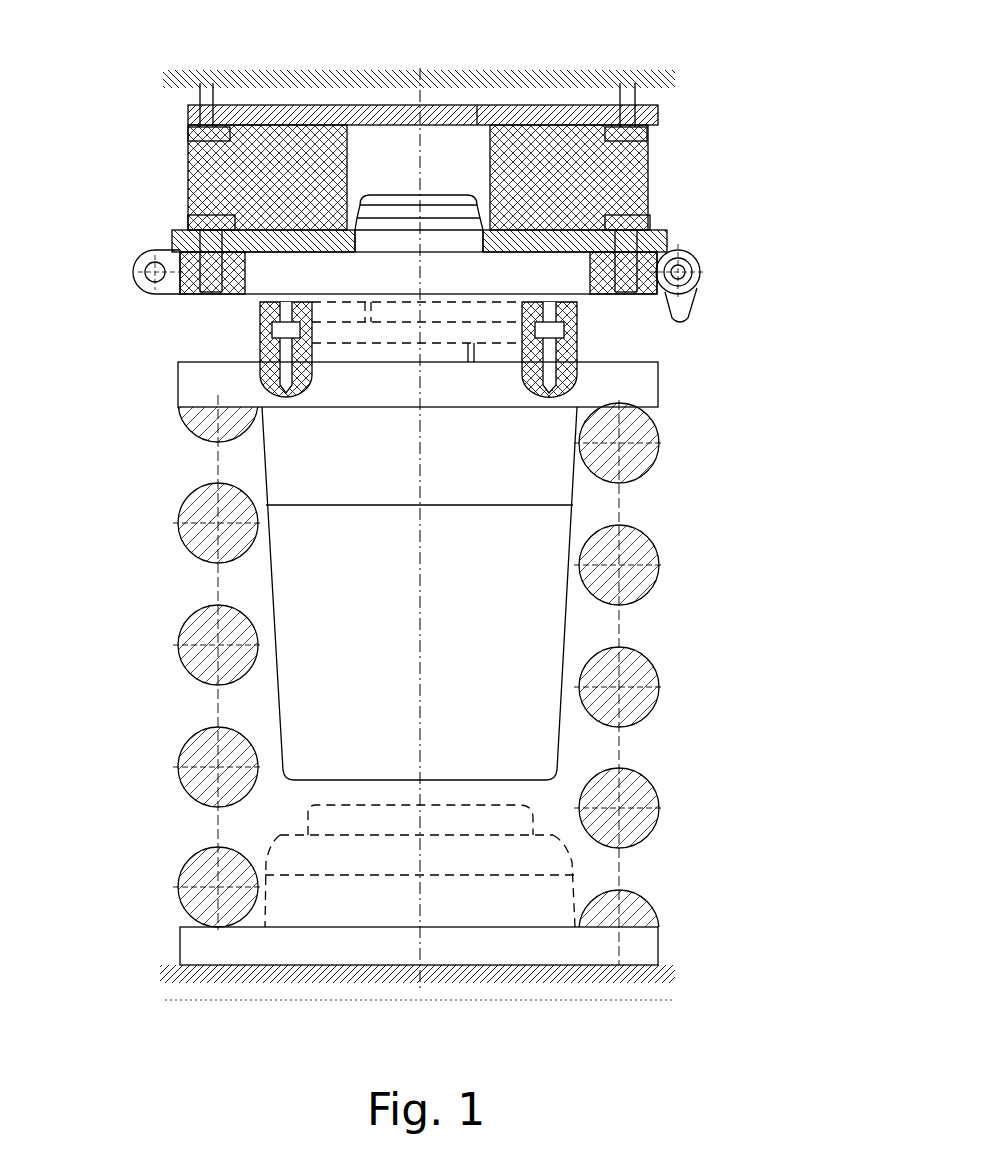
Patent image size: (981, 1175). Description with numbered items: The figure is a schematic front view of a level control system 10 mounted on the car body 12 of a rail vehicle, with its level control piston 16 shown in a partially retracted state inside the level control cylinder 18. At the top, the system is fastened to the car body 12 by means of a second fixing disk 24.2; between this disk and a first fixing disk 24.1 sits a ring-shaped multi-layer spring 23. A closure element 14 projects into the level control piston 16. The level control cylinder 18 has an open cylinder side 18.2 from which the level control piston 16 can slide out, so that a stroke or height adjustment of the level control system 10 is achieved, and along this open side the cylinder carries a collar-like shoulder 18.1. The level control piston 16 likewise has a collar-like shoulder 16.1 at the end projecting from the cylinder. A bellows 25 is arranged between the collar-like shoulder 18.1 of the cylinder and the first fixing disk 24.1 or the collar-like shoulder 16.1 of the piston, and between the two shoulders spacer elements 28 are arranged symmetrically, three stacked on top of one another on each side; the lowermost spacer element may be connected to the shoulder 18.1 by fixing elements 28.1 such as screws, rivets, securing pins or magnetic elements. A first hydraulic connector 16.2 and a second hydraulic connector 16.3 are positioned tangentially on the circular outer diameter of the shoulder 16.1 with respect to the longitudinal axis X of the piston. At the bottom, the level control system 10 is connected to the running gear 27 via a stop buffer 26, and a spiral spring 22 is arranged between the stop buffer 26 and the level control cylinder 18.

The level control system 10 is at (150, 33).
The car body 12 is at (629, 70).
The closure element 14 is at (640, 224).
The level control piston 16 is at (424, 300).
The collar-like shoulder 16.1 is at (578, 332).
The first hydraulic connector 16.2 is at (135, 272).
The second hydraulic connector 16.3 is at (703, 265).
The level control cylinder 18 is at (528, 488).
The collar-like shoulder 18.1 is at (230, 365).
The open cylinder side 18.2 is at (195, 397).
The spiral spring 22 is at (378, 666).
The multi-layer spring 23 is at (600, 160).
The first fixing disk 24.1 is at (200, 212).
The second fixing disk 24.2 is at (180, 115).
The bellows 25 is at (262, 318).
The stop buffer 26 is at (553, 853).
The running gear 27 is at (622, 985).
The spacer elements 28 is at (505, 369).
The fixing elements 28.1 is at (622, 398).
The longitudinal axis X is at (423, 672).